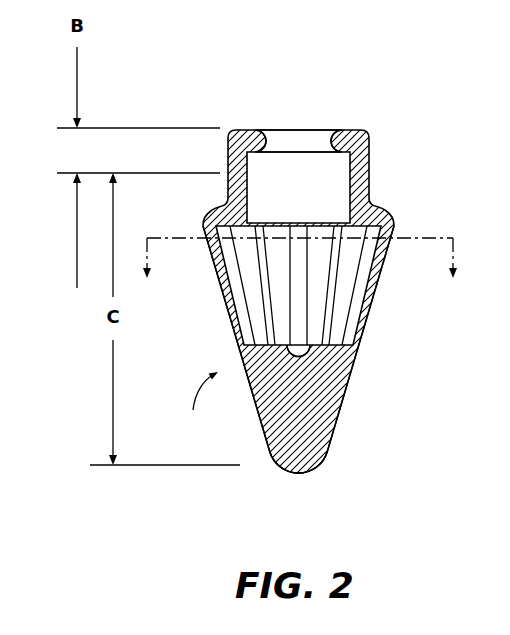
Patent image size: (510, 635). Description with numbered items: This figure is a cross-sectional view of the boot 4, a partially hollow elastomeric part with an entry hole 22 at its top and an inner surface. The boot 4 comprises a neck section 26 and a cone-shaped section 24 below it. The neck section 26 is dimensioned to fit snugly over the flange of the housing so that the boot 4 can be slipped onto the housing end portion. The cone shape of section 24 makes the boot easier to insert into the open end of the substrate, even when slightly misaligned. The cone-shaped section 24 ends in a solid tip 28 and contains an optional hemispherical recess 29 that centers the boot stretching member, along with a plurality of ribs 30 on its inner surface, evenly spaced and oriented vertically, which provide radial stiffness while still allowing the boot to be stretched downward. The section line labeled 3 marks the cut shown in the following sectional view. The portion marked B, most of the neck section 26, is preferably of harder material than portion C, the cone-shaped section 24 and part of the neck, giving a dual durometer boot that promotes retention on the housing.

The entry hole 22 is at (300, 142).
The neck section 26 is at (370, 178).
The cone-shaped section 24 is at (372, 302).
The solid tip 28 is at (323, 425).
The hemispherical recess 29 is at (300, 353).
The ribs 30 is at (298, 327).
The boot 4 is at (185, 442).
The section line 3- 3 is at (300, 270).